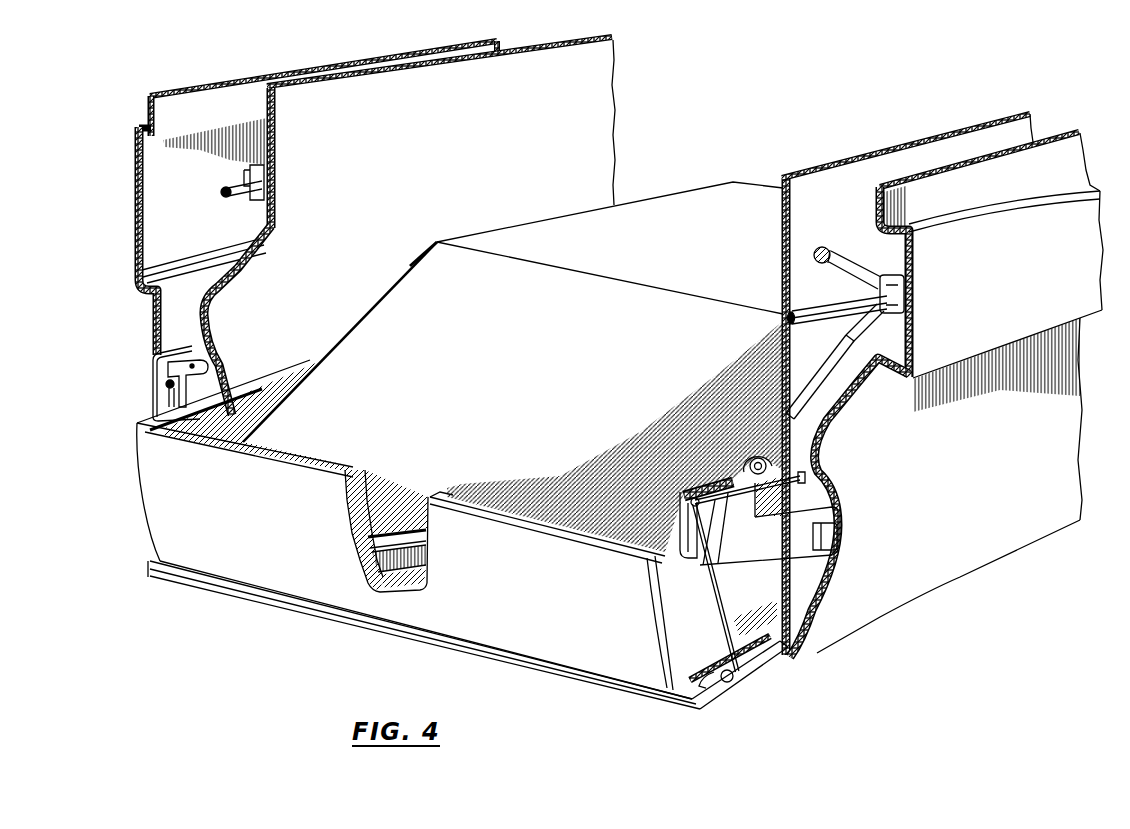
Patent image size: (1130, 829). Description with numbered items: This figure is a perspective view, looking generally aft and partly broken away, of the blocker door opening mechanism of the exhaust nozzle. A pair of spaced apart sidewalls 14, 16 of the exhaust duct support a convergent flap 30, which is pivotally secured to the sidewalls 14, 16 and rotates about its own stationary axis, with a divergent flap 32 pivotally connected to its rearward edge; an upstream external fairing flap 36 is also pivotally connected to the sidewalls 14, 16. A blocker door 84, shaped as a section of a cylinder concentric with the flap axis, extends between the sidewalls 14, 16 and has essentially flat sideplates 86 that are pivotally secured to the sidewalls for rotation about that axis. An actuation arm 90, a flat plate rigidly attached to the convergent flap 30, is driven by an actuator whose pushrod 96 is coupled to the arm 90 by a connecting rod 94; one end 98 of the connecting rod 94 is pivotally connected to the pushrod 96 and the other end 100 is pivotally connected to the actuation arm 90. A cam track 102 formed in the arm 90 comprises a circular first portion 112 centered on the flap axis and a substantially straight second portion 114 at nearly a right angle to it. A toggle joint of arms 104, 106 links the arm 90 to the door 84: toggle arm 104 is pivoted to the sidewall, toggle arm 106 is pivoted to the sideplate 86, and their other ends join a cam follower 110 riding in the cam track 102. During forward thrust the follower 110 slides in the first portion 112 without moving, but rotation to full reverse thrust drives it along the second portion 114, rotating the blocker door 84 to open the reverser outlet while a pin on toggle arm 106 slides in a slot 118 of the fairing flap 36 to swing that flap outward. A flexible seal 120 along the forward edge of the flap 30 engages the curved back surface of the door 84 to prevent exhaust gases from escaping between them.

The sidewall 14 is at (841, 196).
The sidewall 16 is at (516, 153).
The convergent flap 30 is at (546, 392).
The divergent flap 32 is at (708, 242).
The upstream external fairing flap 36 is at (703, 706).
The blocker door 84 is at (470, 622).
The sideplate 86 is at (256, 422).
The actuation arm 90 is at (778, 554).
The connecting rod 94 is at (831, 250).
The pushrod 96 is at (235, 186).
The end of connecting rod 98 is at (888, 275).
The end of connecting rod 100 is at (768, 460).
The cam track 102 is at (193, 360).
The toggle arm 104 is at (744, 498).
The toggle arm 106 is at (727, 615).
The cam follower 110 is at (708, 503).
The first portion of cam track 112 is at (679, 528).
The second portion of cam track 114 is at (710, 486).
The slot 118 is at (773, 648).
The flexible seal 120 is at (398, 536).